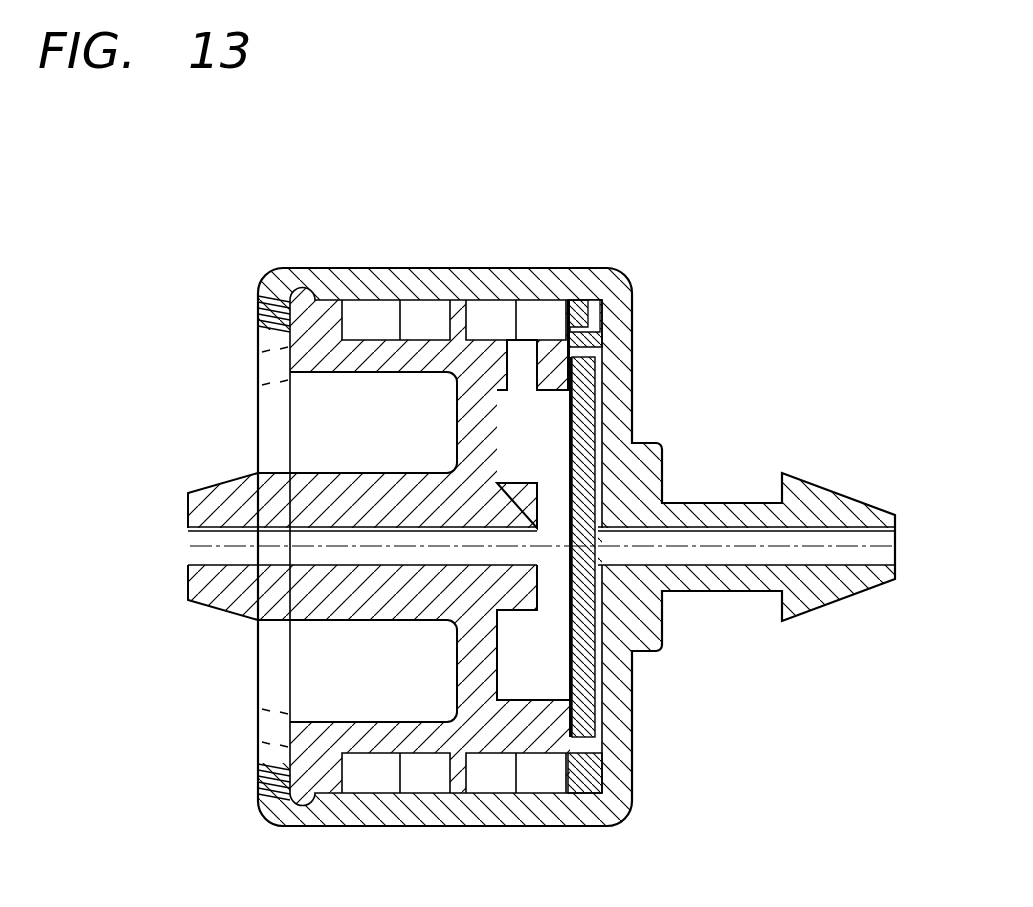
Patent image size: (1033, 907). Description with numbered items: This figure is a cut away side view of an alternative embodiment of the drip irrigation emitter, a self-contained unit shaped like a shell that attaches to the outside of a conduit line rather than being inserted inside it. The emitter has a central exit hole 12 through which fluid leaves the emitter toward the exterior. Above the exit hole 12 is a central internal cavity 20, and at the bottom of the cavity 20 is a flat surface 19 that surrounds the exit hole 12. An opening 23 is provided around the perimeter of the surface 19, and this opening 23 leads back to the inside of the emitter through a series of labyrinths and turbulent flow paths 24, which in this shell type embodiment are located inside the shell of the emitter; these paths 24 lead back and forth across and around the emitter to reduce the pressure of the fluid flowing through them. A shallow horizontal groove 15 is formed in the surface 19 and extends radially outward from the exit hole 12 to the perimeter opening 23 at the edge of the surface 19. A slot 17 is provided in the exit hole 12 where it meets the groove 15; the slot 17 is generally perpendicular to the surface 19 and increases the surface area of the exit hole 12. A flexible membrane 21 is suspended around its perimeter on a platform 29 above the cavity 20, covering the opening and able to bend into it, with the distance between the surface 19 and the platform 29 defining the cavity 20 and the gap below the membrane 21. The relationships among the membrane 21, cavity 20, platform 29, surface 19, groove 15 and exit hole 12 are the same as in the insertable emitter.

The central exit hole 12 is at (200, 553).
The shallow horizontal groove 15 is at (538, 592).
The slot 17 is at (533, 567).
The flat surface 19 is at (550, 487).
The central internal cavity 20 is at (547, 430).
The flexible membrane 21 is at (598, 696).
The opening 23 is at (527, 350).
The labyrinths and turbulent flow paths 24 is at (378, 322).
The platform 29 is at (563, 347).